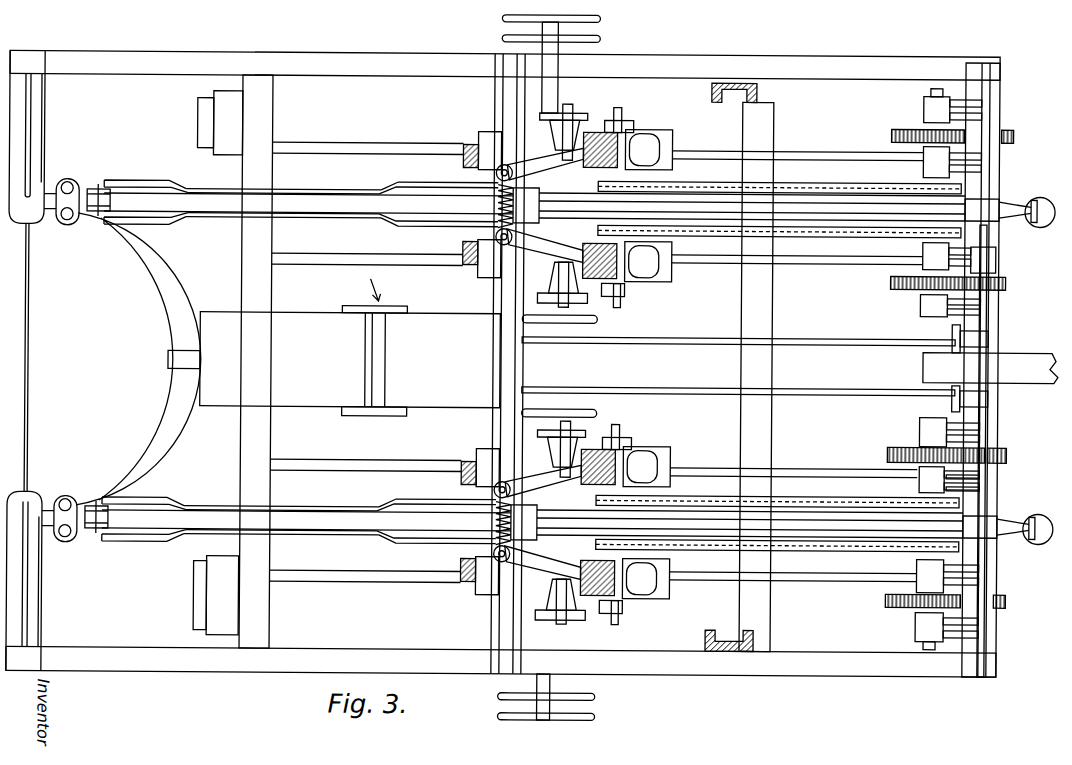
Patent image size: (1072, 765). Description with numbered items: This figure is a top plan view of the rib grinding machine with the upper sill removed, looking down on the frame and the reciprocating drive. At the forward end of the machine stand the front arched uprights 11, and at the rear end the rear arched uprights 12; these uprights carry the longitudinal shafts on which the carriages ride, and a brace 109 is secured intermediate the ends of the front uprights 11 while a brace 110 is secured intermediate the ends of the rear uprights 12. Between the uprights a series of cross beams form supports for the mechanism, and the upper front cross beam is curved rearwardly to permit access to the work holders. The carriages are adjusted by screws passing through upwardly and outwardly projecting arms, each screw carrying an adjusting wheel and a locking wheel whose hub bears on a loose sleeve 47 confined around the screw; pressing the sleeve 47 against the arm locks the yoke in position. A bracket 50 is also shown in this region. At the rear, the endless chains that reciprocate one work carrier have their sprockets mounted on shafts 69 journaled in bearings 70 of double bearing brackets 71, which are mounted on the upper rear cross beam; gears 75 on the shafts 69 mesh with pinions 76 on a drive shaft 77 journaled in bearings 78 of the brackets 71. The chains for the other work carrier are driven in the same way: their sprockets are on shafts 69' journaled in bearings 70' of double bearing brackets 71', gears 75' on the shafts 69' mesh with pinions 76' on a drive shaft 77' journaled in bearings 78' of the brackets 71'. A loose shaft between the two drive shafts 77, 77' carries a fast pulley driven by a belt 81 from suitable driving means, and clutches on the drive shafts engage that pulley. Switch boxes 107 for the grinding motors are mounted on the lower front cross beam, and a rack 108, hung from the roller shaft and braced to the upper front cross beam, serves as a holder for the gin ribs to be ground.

The arched upright 11 is at (22, 585).
The arched upright 12 is at (987, 580).
The loose sleeve 47 is at (556, 98).
The bracket 50 is at (588, 300).
The shaft 69 is at (926, 574).
The shaft 69' is at (929, 210).
The bearing 70 is at (911, 553).
The bearing 70' is at (928, 105).
The double bearing bracket 71 is at (989, 493).
The double bearing bracket 71' is at (958, 206).
The gear 75 is at (916, 528).
The gear 75' is at (908, 140).
The pinion 76 is at (1013, 522).
The pinion 76' is at (1025, 137).
The drive shaft 77 is at (992, 470).
The drive shaft 77' is at (968, 292).
The bearing 78 is at (979, 431).
The bearing 78' is at (1006, 258).
The belt 81 is at (992, 396).
The switch box 107 is at (196, 609).
The rack 108 is at (400, 414).
The brace 109 is at (29, 297).
The brace 110 is at (990, 366).